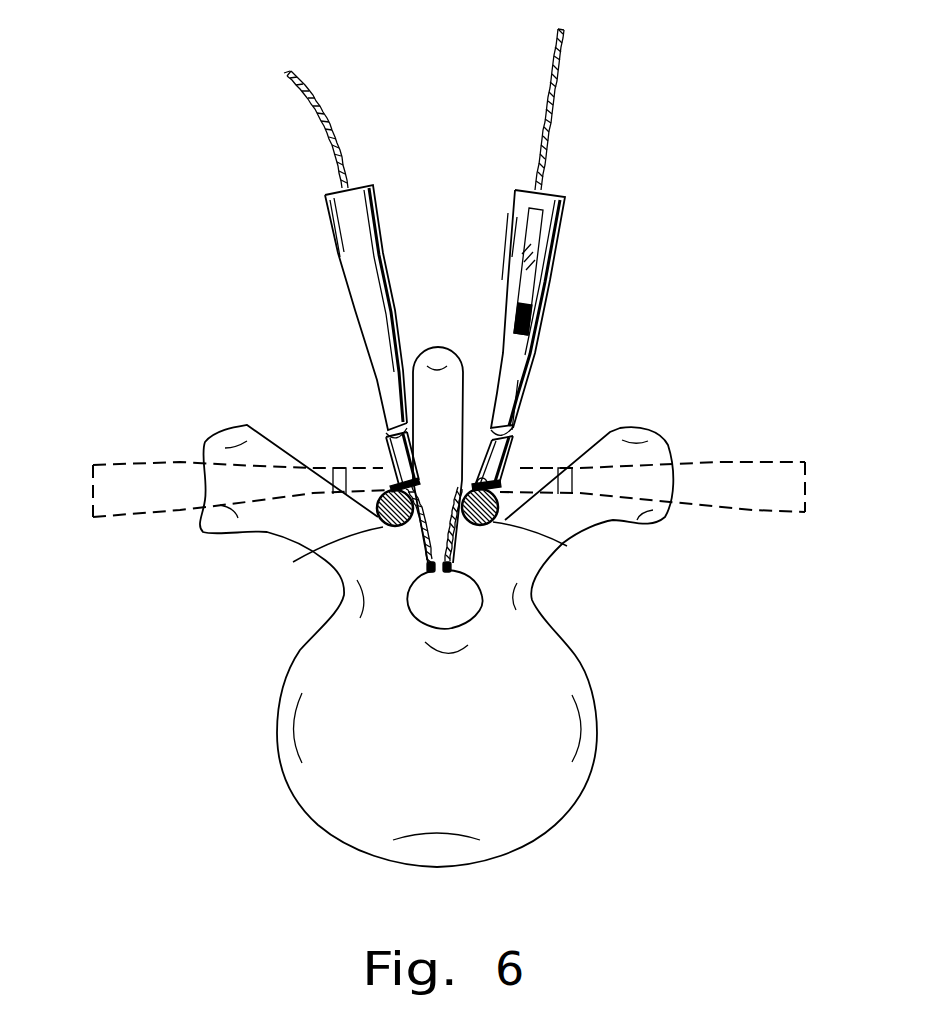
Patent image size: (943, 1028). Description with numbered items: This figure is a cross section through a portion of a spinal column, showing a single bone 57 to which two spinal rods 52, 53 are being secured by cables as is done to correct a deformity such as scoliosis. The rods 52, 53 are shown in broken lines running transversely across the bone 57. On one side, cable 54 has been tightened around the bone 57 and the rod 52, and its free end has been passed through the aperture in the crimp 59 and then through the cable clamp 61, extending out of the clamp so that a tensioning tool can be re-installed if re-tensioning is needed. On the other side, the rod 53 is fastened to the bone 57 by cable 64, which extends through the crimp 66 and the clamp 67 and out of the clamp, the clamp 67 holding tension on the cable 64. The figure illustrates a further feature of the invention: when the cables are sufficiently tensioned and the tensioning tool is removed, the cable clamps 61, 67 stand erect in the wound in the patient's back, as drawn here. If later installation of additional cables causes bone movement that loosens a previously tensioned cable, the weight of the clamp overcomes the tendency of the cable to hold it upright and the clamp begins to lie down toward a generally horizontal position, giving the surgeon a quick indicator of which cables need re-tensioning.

The spinal rod 52 is at (318, 557).
The spinal rod 53 is at (567, 546).
The cable 54 is at (292, 88).
The bone 57 is at (343, 592).
The crimp 59 is at (395, 452).
The cable clamp 61 is at (355, 235).
The cable 64 is at (552, 97).
The crimp 66 is at (515, 452).
The cable clamp 67 is at (561, 218).